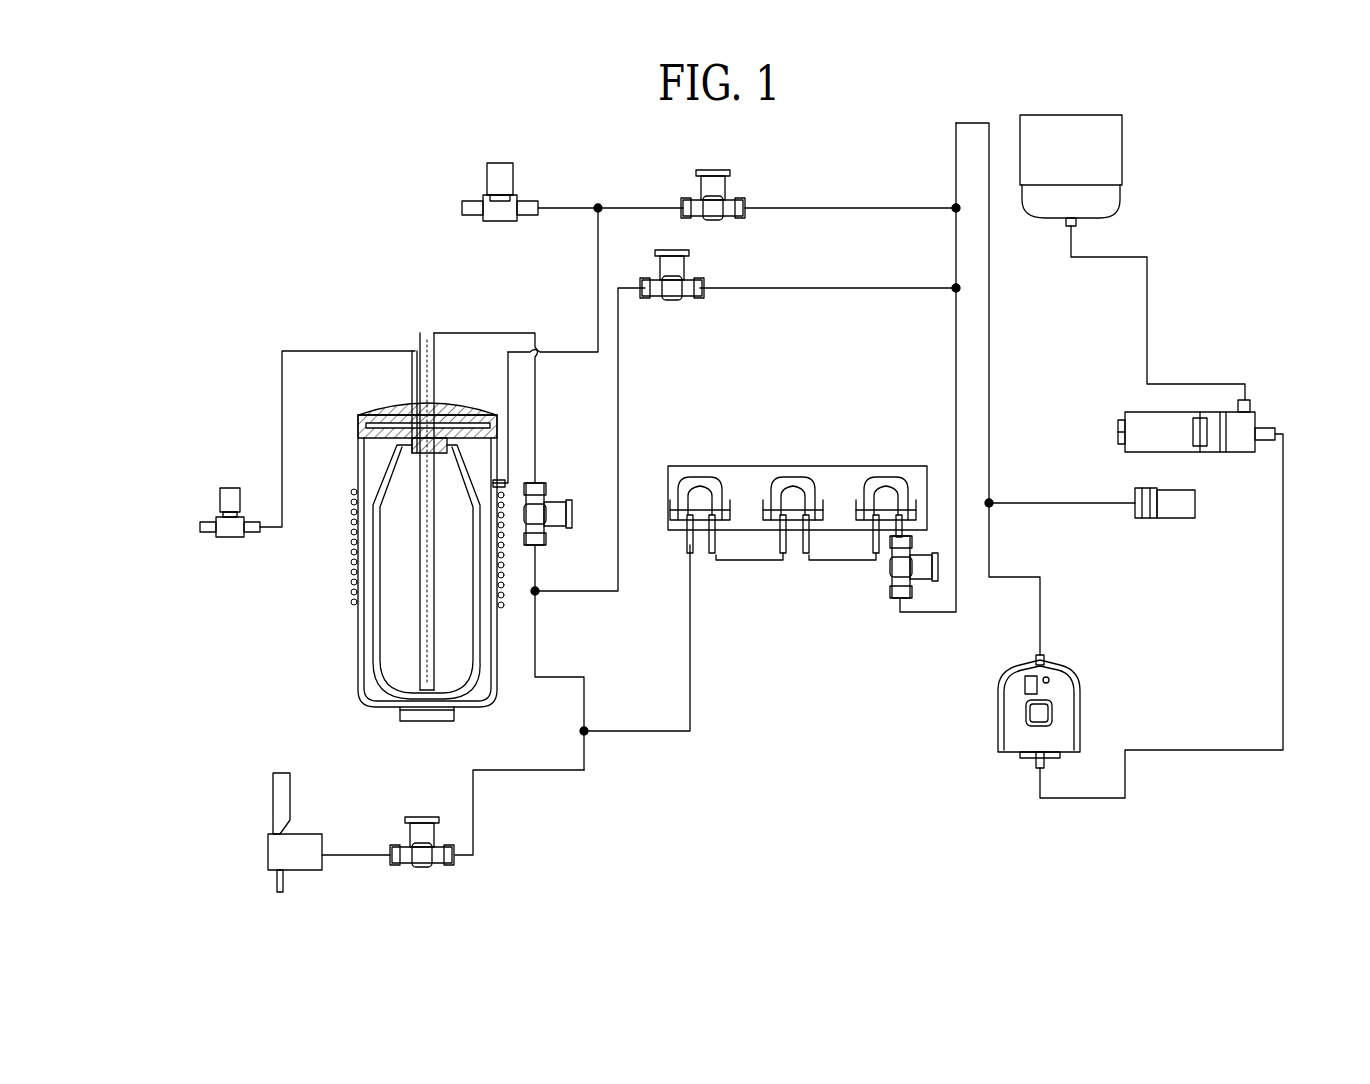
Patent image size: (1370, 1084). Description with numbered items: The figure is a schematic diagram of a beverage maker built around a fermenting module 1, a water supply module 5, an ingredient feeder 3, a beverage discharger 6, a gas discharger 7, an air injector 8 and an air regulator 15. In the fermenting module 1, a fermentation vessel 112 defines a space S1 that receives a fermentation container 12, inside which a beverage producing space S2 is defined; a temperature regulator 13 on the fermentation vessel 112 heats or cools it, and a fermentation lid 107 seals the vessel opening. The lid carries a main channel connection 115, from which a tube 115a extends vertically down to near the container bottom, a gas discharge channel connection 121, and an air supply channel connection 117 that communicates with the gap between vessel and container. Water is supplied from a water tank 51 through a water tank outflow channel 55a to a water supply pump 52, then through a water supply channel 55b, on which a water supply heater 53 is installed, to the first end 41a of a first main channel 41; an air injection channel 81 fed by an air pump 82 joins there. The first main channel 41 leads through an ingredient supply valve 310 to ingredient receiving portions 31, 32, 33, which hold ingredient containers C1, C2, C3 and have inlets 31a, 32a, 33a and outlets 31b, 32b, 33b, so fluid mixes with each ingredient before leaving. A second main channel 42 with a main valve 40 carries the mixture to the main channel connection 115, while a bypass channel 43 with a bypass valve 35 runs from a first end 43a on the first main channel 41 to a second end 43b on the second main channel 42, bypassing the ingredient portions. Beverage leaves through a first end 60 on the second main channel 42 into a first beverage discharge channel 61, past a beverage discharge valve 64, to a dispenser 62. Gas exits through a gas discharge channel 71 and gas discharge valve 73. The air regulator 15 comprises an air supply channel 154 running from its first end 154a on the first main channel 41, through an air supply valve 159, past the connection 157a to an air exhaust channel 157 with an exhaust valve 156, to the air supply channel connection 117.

The fermenting module 1 is at (397, 518).
The fermentation lid 107 is at (370, 408).
The fermentation container 12 is at (387, 568).
The fermentation vessel 112 is at (392, 683).
The temperature regulator 13 is at (345, 553).
The main channel connection 115 is at (435, 392).
The tube 115a is at (420, 688).
The air supply channel connection 117 is at (500, 490).
The gas discharge channel connection 121 is at (413, 396).
The space S1 is at (372, 462).
The beverage producing space S2 is at (437, 692).
The gas discharger 7 is at (195, 378).
The gas discharge channel 71 is at (282, 356).
The gas discharge valve 73 is at (219, 494).
The air regulator 15 is at (671, 166).
The air supply channel 154 is at (598, 266).
The first end of air supply channel 154a is at (954, 206).
The exhaust valve 156 is at (500, 163).
The air exhaust channel 157 is at (572, 208).
The connection to air exhaust channel 157a is at (600, 206).
The air supply valve 159 is at (716, 163).
The bypass valve 35 is at (672, 302).
The main valve 40 is at (548, 490).
The second main channel 42 is at (538, 436).
The bypass channel 43 is at (745, 290).
The first end of bypass channel 43a is at (954, 285).
The second end of bypass channel 43b is at (540, 594).
The first main channel 41 is at (970, 122).
The first end of first main channel 41a is at (985, 503).
The ingredient feeder 3 is at (818, 494).
The ingredient receiving portion 31 is at (897, 510).
The inlet 31a is at (905, 530).
The outlet 31b is at (876, 556).
The ingredient supply valve 310 is at (893, 598).
The ingredient receiving portion 32 is at (784, 512).
The inlet 32a is at (810, 545).
The outlet 32b is at (784, 556).
The ingredient receiving portion 33 is at (705, 509).
The inlet 33a is at (716, 545).
The outlet 33b is at (686, 545).
The ingredient container C1 is at (878, 478).
The ingredient container C2 is at (790, 478).
The ingredient container C3 is at (692, 478).
The first end of first beverage discharge channel 60 is at (580, 731).
The first beverage discharge channel 61 is at (517, 772).
The beverage discharger 6 is at (329, 852).
The dispenser 62 is at (318, 870).
The beverage discharge valve 64 is at (420, 818).
The water supply module 5 is at (1140, 456).
The water tank 51 is at (1107, 160).
The water supply pump 52 is at (1140, 412).
The water supply heater 53 is at (1068, 712).
The water tank outflow channel 55a is at (1148, 322).
The water supply channel 55b is at (1043, 636).
The air injector 8 is at (1113, 519).
The air injection channel 81 is at (1008, 502).
The air pump 82 is at (1169, 490).